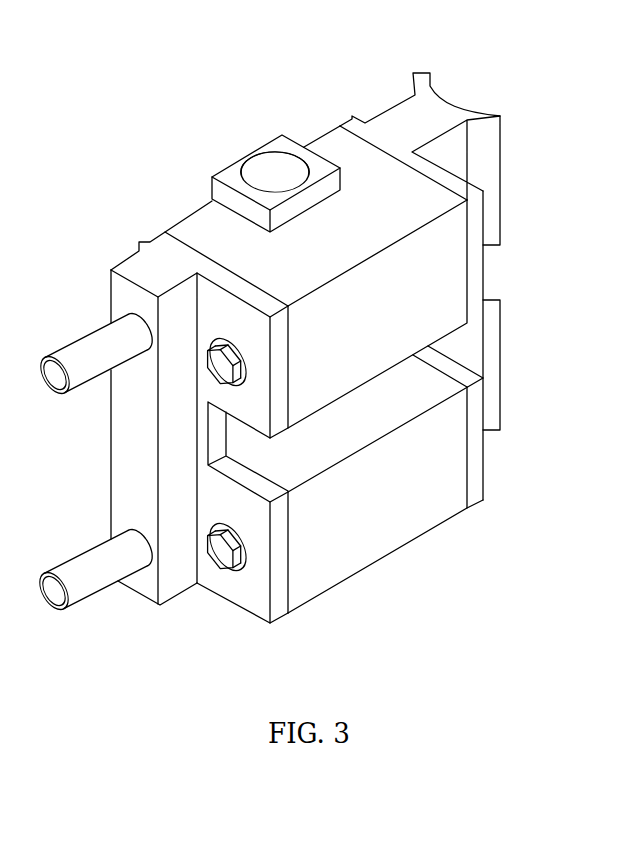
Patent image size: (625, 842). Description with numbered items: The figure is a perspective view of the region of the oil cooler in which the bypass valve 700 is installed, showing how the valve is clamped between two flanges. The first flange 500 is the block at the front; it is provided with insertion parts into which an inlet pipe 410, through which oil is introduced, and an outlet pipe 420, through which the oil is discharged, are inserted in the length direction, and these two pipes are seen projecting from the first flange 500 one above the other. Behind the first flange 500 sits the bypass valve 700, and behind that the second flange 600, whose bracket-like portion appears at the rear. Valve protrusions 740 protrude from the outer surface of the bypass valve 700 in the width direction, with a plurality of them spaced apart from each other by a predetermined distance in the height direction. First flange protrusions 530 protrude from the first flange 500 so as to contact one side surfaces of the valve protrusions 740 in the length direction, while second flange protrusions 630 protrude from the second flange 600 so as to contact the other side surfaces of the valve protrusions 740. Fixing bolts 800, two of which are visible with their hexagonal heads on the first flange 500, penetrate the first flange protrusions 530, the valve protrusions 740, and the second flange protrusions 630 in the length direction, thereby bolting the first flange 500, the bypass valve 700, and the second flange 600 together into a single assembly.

The inlet pipe 410 is at (70, 343).
The outlet pipe 420 is at (67, 560).
The first flange 500 is at (118, 258).
The first flange protrusions 530 is at (275, 415).
The second flange 600 is at (395, 98).
The second flange protrusions 630 is at (507, 303).
The bypass valve 700 is at (255, 148).
The valve protrusions 740 is at (385, 350).
The fixing bolts 800 is at (207, 363).